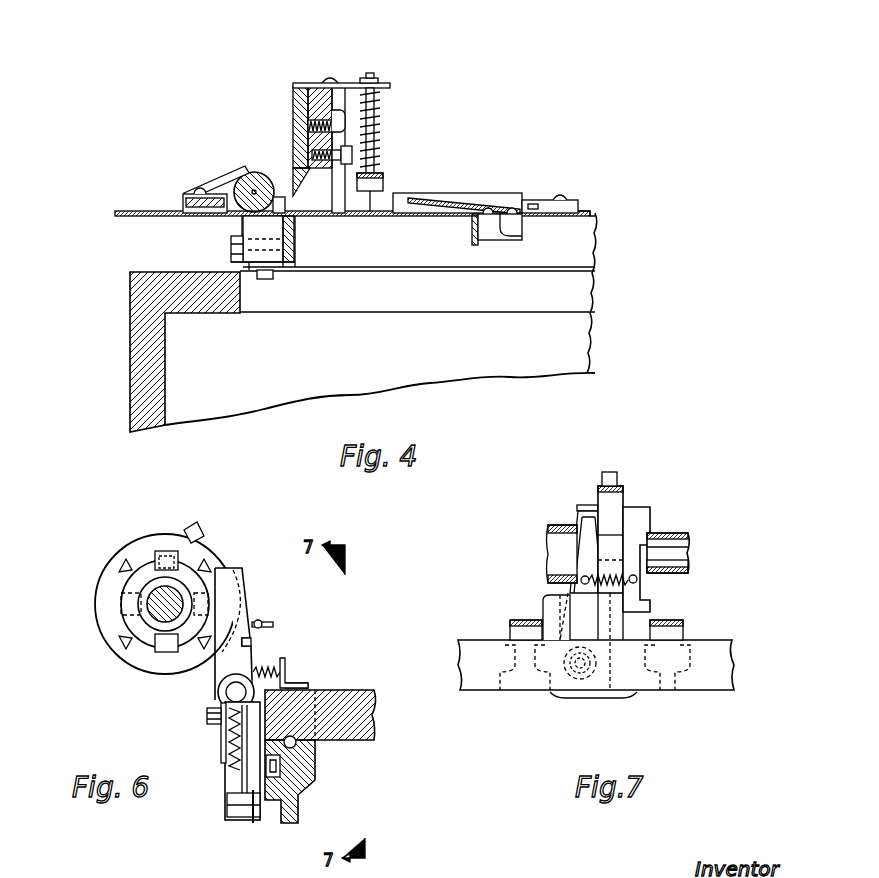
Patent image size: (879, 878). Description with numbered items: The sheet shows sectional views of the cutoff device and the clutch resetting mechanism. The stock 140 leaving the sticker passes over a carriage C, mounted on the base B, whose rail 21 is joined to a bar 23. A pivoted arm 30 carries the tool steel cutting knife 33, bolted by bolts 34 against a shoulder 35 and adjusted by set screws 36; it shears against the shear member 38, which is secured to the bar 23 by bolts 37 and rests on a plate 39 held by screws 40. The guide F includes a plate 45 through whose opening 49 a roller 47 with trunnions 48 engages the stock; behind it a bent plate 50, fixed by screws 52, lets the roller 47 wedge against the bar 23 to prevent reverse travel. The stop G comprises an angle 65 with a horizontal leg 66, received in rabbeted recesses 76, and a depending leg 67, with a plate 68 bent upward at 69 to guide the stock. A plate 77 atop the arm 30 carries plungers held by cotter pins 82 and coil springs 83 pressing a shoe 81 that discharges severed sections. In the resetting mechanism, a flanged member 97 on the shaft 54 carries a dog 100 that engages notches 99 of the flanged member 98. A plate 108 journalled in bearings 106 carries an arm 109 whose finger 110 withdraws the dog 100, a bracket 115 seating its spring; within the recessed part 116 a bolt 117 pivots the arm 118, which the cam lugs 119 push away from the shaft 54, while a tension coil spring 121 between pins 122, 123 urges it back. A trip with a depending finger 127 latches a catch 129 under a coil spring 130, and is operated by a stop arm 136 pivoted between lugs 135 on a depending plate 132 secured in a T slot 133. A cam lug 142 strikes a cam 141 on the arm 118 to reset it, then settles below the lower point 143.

In FIG. 4, the base B is at (140, 354).
In FIG. 6, the base B is at (312, 775).
In FIG. 4, the carriage C is at (598, 215).
In FIG. 6, the carriage C is at (366, 690).
In FIG. 7, the carriage C is at (483, 675).
In FIG. 4, the guide F is at (246, 170).
In FIG. 4, the stop G is at (470, 206).
In FIG. 4, the rail 21 is at (570, 250).
In FIG. 4, the bar 23 is at (252, 262).
In FIG. 4, the arm 30 is at (328, 83).
In FIG. 4, the cutting knife 33 is at (293, 115).
In FIG. 4, the bolts 34 is at (346, 127).
In FIG. 4, the shoulder 35 is at (293, 95).
In FIG. 4, the set screws 36 is at (353, 155).
In FIG. 4, the bolts 37 is at (238, 258).
In FIG. 4, the shear member 38 is at (296, 240).
In FIG. 4, the plate 39 is at (283, 265).
In FIG. 4, the screws 40 is at (265, 280).
In FIG. 4, the plate 45 is at (185, 195).
In FIG. 4, the roller 47 is at (258, 172).
In FIG. 4, the trunnions 48 is at (238, 216).
In FIG. 4, the opening 49 is at (236, 213).
In FIG. 4, the bent plate 50 is at (243, 180).
In FIG. 4, the screws 52 is at (199, 190).
In FIG. 6, the shaft 54 is at (152, 596).
In FIG. 7, the shaft 54 is at (680, 545).
In FIG. 4, the angle 65 is at (470, 216).
In FIG. 4, the horizontal leg 66 is at (524, 230).
In FIG. 4, the depending leg 67 is at (477, 246).
In FIG. 4, the plate 68 is at (450, 205).
In FIG. 4, the upward bend 69 is at (420, 200).
In FIG. 4, the rabbeted recesses 76 is at (570, 203).
In FIG. 4, the plate 77 is at (349, 83).
In FIG. 4, the shoe 81 is at (374, 193).
In FIG. 4, the cotter pins 82 is at (380, 80).
In FIG. 4, the coil springs 83 is at (382, 102).
In FIG. 6, the flanged member 97 is at (130, 545).
In FIG. 7, the flanged member 97 is at (624, 492).
In FIG. 6, the flanged member 98 is at (150, 565).
In FIG. 7, the flanged member 98 is at (597, 510).
In FIG. 6, the notches 99 is at (121, 610).
In FIG. 6, the dog 100 is at (168, 550).
In FIG. 7, the dog 100 is at (598, 500).
In FIG. 6, the bearings 106 is at (226, 695).
In FIG. 7, the bearings 106 is at (665, 626).
In FIG. 6, the plate 108 is at (262, 665).
In FIG. 7, the plate 108 is at (626, 610).
In FIG. 7, the arm 109 is at (660, 562).
In FIG. 7, the finger 110 is at (627, 540).
In FIG. 6, the bracket 115 is at (293, 666).
In FIG. 6, the recessed part 116 is at (256, 646).
In FIG. 6, the bolt 117 is at (207, 722).
In FIG. 6, the arm 118 is at (224, 580).
In FIG. 6, the cam lugs 119 is at (123, 565).
In FIG. 7, the tension coil spring 121 is at (556, 610).
In FIG. 7, the pin 122 is at (640, 579).
In FIG. 6, the pin 123 is at (272, 624).
In FIG. 7, the pin 123 is at (581, 580).
In FIG. 6, the depending finger 127 is at (240, 785).
In FIG. 6, the catch 129 is at (226, 732).
In FIG. 6, the coil spring 130 is at (232, 747).
In FIG. 6, the depending plate 132 is at (296, 778).
In FIG. 6, the T slot 133 is at (278, 766).
In FIG. 6, the lugs 135 is at (244, 817).
In FIG. 6, the stop arm 136 is at (257, 805).
In FIG. 4, the stock 140 is at (115, 213).
In FIG. 7, the cam 141 is at (565, 550).
In FIG. 6, the cam lug 142 is at (196, 527).
In FIG. 7, the cam lug 142 is at (612, 472).
In FIG. 7, the lower point 143 is at (610, 566).